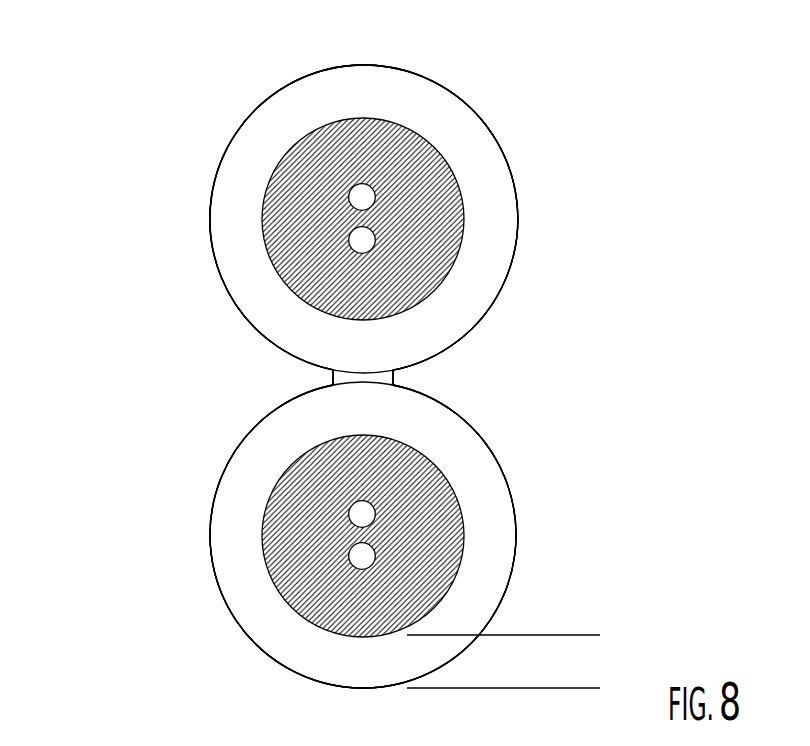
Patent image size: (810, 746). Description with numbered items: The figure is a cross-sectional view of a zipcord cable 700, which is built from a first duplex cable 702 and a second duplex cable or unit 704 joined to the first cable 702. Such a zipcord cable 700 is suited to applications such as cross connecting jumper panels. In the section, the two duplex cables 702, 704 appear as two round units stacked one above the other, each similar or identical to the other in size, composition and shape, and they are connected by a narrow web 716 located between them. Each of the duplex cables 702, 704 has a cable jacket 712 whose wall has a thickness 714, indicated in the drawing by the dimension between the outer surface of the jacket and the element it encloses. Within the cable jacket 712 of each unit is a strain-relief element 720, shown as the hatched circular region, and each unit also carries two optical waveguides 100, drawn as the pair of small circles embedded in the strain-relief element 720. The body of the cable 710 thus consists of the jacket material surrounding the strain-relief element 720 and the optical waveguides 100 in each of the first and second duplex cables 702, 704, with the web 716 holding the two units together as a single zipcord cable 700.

The zipcord cable 700 is at (80, 202).
The first duplex cable 702 is at (504, 124).
The second duplex cable 704 is at (494, 415).
The cable jacket 710 is at (233, 495).
The cable jacket 712 is at (407, 98).
The thickness 714 is at (552, 608).
The web 716 is at (365, 379).
The strain-relief element 720 is at (318, 155).
The optical waveguides 100 is at (370, 241).